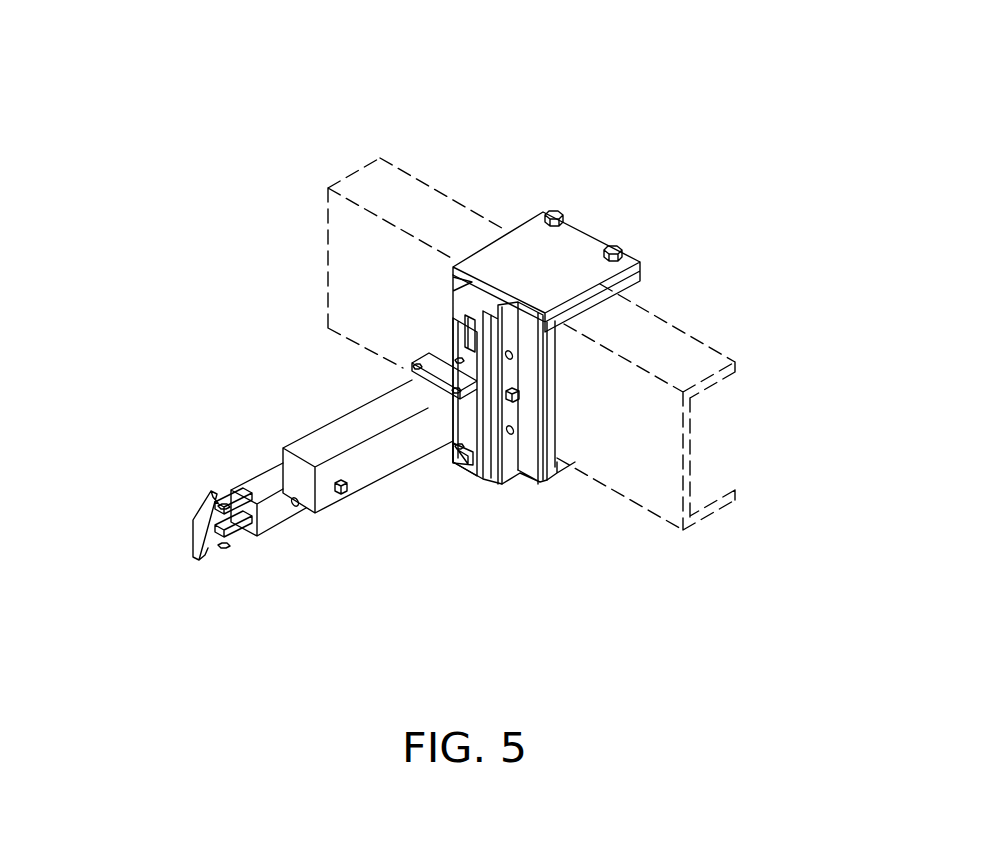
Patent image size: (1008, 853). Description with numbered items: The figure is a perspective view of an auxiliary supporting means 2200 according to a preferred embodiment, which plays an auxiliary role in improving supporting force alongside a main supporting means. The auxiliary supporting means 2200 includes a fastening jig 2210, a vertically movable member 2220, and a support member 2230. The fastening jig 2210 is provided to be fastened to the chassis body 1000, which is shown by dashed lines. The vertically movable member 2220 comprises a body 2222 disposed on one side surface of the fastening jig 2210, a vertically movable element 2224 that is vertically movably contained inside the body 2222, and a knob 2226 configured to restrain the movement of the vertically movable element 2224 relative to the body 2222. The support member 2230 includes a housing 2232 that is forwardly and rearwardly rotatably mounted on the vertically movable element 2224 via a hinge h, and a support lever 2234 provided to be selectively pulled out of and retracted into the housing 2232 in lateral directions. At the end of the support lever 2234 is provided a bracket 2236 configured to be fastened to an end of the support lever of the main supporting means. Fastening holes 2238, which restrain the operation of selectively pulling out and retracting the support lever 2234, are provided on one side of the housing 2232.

The chassis body 1000 is at (700, 340).
The auxiliary supporting means 2200 is at (512, 172).
The fastening jig 2210 is at (583, 236).
The vertically movable member 2220 is at (603, 613).
The body 2222 is at (480, 468).
The vertically movable element 2224 is at (476, 321).
The knob 2226 is at (520, 395).
The support member 2230 is at (155, 333).
The housing 2232 is at (348, 410).
The support lever 2234 is at (262, 478).
The bracket 2236 is at (200, 540).
The fastening holes 2238 is at (347, 492).
The hinge h is at (460, 358).